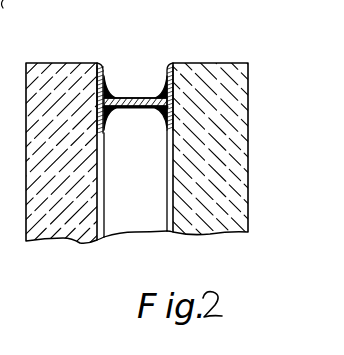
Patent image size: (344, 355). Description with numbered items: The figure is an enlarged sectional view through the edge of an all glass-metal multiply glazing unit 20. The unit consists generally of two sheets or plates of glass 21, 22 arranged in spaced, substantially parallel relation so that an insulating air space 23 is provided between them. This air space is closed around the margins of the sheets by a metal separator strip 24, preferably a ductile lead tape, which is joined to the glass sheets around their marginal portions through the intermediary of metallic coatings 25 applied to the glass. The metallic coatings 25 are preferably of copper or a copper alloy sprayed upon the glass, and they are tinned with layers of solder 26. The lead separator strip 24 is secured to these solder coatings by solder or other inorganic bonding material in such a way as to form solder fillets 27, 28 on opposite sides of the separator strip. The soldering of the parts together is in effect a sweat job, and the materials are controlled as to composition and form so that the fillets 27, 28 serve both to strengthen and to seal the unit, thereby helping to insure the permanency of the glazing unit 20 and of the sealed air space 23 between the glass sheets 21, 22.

The all glass-metal multiply glazing unit 20 is at (218, 62).
The sheet of glass 21 is at (58, 215).
The sheet of glass 22 is at (228, 201).
The insulating air space 23 is at (135, 198).
The metal separator strip 24 is at (133, 109).
The metallic coating 25 is at (99, 68).
The layer of solder 26 is at (109, 86).
The solder fillet 27 is at (160, 95).
The solder fillet 28 is at (163, 112).